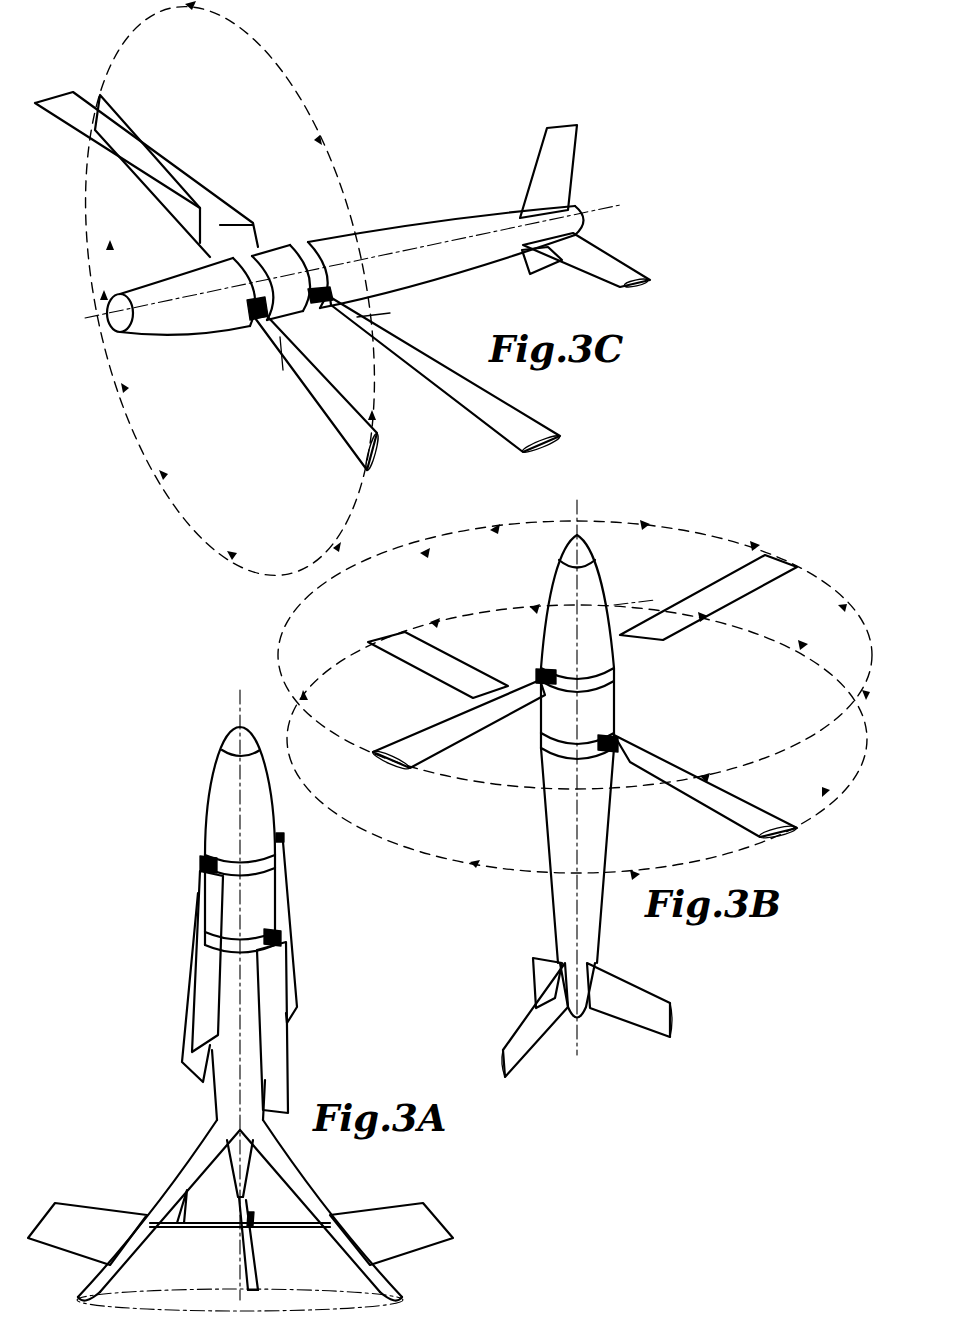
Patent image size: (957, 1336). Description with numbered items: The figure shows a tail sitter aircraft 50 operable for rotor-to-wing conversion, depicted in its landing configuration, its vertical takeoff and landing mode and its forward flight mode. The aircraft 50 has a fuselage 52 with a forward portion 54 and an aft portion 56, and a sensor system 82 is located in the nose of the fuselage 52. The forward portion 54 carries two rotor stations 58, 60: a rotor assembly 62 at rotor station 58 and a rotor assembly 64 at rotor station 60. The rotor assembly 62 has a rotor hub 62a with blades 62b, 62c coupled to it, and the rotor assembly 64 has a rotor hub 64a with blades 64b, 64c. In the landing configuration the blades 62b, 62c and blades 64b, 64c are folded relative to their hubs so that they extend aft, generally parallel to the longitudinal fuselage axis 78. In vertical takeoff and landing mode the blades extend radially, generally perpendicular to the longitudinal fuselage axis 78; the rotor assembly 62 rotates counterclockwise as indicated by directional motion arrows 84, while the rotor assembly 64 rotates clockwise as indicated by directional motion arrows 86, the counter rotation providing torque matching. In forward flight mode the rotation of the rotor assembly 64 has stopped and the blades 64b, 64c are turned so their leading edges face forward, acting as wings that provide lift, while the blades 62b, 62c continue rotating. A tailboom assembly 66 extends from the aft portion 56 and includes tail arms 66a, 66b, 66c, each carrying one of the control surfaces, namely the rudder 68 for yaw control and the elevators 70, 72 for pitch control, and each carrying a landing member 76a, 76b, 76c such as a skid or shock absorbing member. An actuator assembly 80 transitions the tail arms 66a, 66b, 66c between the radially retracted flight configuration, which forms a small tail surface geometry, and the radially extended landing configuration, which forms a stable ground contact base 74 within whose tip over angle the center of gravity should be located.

In FIG. 3C, the tail sitter aircraft 50 is at (392, 252).
In FIG. 3B, the tail sitter aircraft 50 is at (583, 777).
In FIG. 3A, the tail sitter aircraft 50 is at (262, 973).
In FIG. 3C, the fuselage 52 is at (167, 333).
In FIG. 3B, the fuselage 52 is at (545, 590).
In FIG. 3A, the fuselage 52 is at (208, 785).
In FIG. 3C, the forward portion 54 is at (273, 252).
In FIG. 3B, the forward portion 54 is at (607, 700).
In FIG. 3A, the forward portion 54 is at (273, 892).
In FIG. 3C, the aft portion 56 is at (466, 222).
In FIG. 3B, the aft portion 56 is at (592, 938).
In FIG. 3A, the aft portion 56 is at (220, 1105).
In FIG. 3C, the rotor station 58 is at (237, 256).
In FIG. 3B, the rotor station 58 is at (610, 672).
In FIG. 3A, the rotor station 58 is at (278, 865).
In FIG. 3C, the rotor station 60 is at (298, 245).
In FIG. 3B, the rotor station 60 is at (540, 742).
In FIG. 3A, the rotor station 60 is at (230, 935).
In FIG. 3C, the rotor assembly 62 is at (236, 283).
In FIG. 3B, the rotor assembly 62 is at (587, 628).
In FIG. 3A, the rotor assembly 62 is at (252, 942).
In FIG. 3C, the rotor hub 62a is at (254, 320).
In FIG. 3B, the rotor hub 62a is at (540, 670).
In FIG. 3A, the rotor hub 62a is at (203, 860).
In FIG. 3C, the blade 62b is at (345, 440).
In FIG. 3B, the blade 62b is at (402, 743).
In FIG. 3A, the blade 62b is at (200, 970).
In FIG. 3C, the blade 62c is at (168, 205).
In FIG. 3B, the blade 62c is at (690, 600).
In FIG. 3A, the blade 62c is at (298, 983).
In FIG. 3C, the rotor assembly 64 is at (323, 244).
In FIG. 3B, the rotor assembly 64 is at (582, 706).
In FIG. 3A, the rotor assembly 64 is at (233, 1003).
In FIG. 3C, the rotor hub 64a is at (322, 290).
In FIG. 3B, the rotor hub 64a is at (615, 740).
In FIG. 3A, the rotor hub 64a is at (280, 935).
In FIG. 3C, the blade 64b is at (530, 420).
In FIG. 3B, the blade 64b is at (393, 638).
In FIG. 3A, the blade 64b is at (285, 1073).
In FIG. 3C, the blade 64c is at (68, 100).
In FIG. 3B, the blade 64c is at (770, 822).
In FIG. 3A, the blade 64c is at (188, 1060).
In FIG. 3C, the tailboom assembly 66 is at (587, 208).
In FIG. 3B, the tailboom assembly 66 is at (585, 1022).
In FIG. 3A, the tailboom assembly 66 is at (239, 1210).
In FIG. 3A, the tail arm 66a is at (348, 1210).
In FIG. 3A, the tail arm 66b is at (130, 1210).
In FIG. 3A, the tail arm 66c is at (277, 1243).
In FIG. 3C, the rudder 68 is at (568, 163).
In FIG. 3B, the rudder 68 is at (640, 1018).
In FIG. 3A, the rudder 68 is at (435, 1218).
In FIG. 3C, the elevator 70 is at (543, 272).
In FIG. 3B, the elevator 70 is at (540, 968).
In FIG. 3C, the elevator 72 is at (617, 265).
In FIG. 3B, the elevator 72 is at (534, 1035).
In FIG. 3A, the elevator 72 is at (57, 1218).
In FIG. 3A, the ground contact base 74 is at (400, 1300).
In FIG. 3A, the landing member 76a is at (385, 1283).
In FIG. 3A, the landing member 76b is at (100, 1290).
In FIG. 3A, the landing member 76c is at (258, 1275).
In FIG. 3C, the longitudinal fuselage axis 78 is at (95, 315).
In FIG. 3B, the longitudinal fuselage axis 78 is at (575, 513).
In FIG. 3A, the longitudinal fuselage axis 78 is at (238, 707).
In FIG. 3A, the actuator assembly 80 is at (188, 1200).
In FIG. 3C, the sensor system 82 is at (112, 325).
In FIG. 3B, the sensor system 82 is at (597, 522).
In FIG. 3A, the sensor system 82 is at (236, 738).
In FIG. 3C, the directional motion arrows 84 is at (265, 52).
In FIG. 3B, the directional motion arrows 84 is at (443, 525).
In FIG. 3B, the directional motion arrows 86 is at (430, 862).